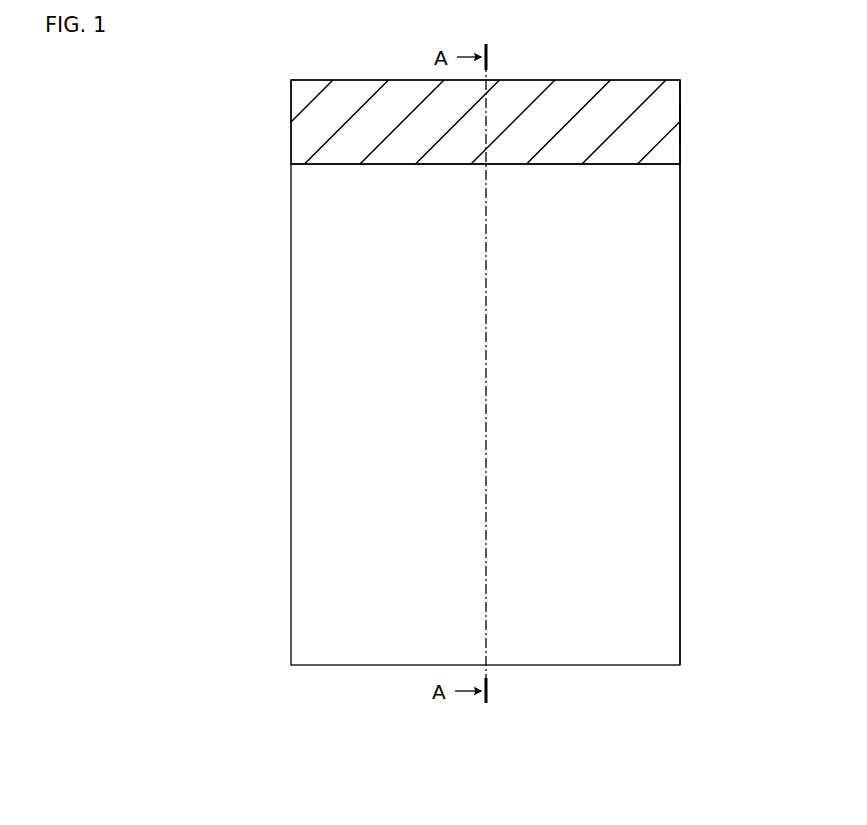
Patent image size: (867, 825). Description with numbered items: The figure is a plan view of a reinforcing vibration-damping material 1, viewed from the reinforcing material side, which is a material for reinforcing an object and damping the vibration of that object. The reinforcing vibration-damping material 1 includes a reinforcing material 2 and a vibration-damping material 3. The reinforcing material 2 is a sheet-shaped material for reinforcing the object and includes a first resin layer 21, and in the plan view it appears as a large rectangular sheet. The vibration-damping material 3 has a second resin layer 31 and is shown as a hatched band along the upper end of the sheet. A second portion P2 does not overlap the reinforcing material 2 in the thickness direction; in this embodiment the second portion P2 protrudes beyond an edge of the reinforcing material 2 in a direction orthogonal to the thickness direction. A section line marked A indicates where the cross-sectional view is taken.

The reinforcing vibration-damping material 1 is at (507, 421).
The reinforcing material 2 is at (662, 353).
The first resin layer 21 is at (675, 228).
The vibration-damping material 3 is at (679, 113).
The second resin layer 31 is at (677, 152).
The second portion P2 is at (677, 137).